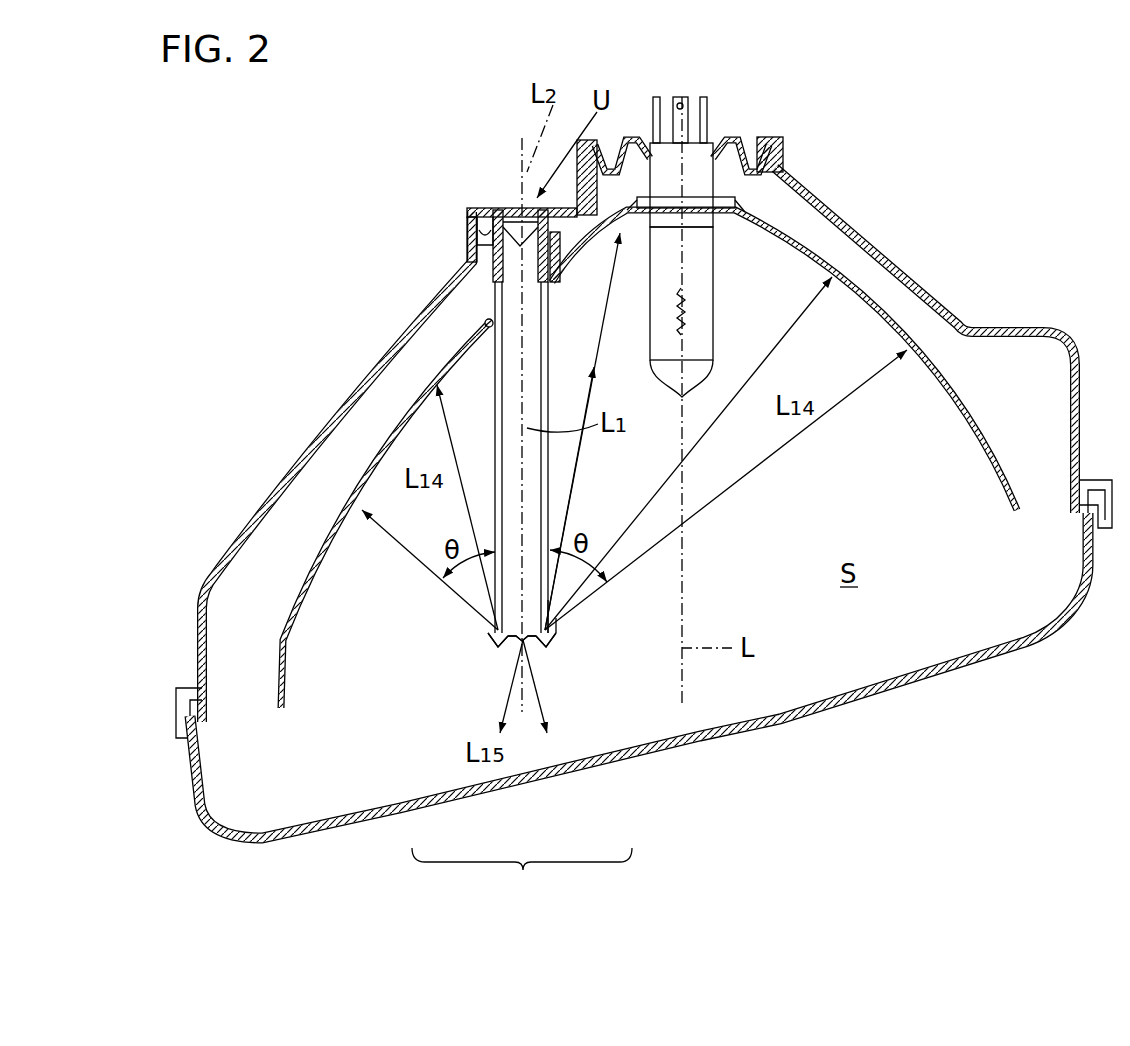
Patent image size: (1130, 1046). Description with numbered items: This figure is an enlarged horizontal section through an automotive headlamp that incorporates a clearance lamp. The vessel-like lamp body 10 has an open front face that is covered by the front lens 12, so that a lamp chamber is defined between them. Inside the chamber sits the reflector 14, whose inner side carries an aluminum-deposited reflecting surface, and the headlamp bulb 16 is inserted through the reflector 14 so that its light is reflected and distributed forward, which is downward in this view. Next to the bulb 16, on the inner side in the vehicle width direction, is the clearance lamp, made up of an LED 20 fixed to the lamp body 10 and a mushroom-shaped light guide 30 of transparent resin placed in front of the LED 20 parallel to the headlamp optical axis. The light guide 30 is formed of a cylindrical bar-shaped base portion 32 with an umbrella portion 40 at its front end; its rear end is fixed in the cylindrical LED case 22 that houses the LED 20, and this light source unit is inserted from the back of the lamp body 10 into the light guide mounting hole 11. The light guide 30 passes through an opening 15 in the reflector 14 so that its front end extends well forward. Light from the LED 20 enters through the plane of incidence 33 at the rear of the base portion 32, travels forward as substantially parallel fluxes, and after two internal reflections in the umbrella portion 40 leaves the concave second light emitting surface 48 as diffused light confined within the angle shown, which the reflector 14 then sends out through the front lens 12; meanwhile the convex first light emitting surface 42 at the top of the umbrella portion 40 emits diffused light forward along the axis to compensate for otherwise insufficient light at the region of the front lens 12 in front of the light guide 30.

The lamp body 10 is at (363, 375).
The light guide mounting hole 11 is at (467, 228).
The front lens 12 is at (803, 722).
The reflector 14 is at (370, 468).
The opening 15 is at (483, 325).
The headlamp bulb 16 is at (714, 297).
The LED 20 is at (517, 208).
The LED case 22 is at (467, 252).
The light guide 30 is at (522, 771).
The bar-shaped base portion 32 is at (497, 597).
The plane of incidence 33 is at (505, 212).
The umbrella portion 40 is at (556, 652).
The first light emitting surface 42 is at (530, 648).
The second light emitting surface 48 is at (560, 618).